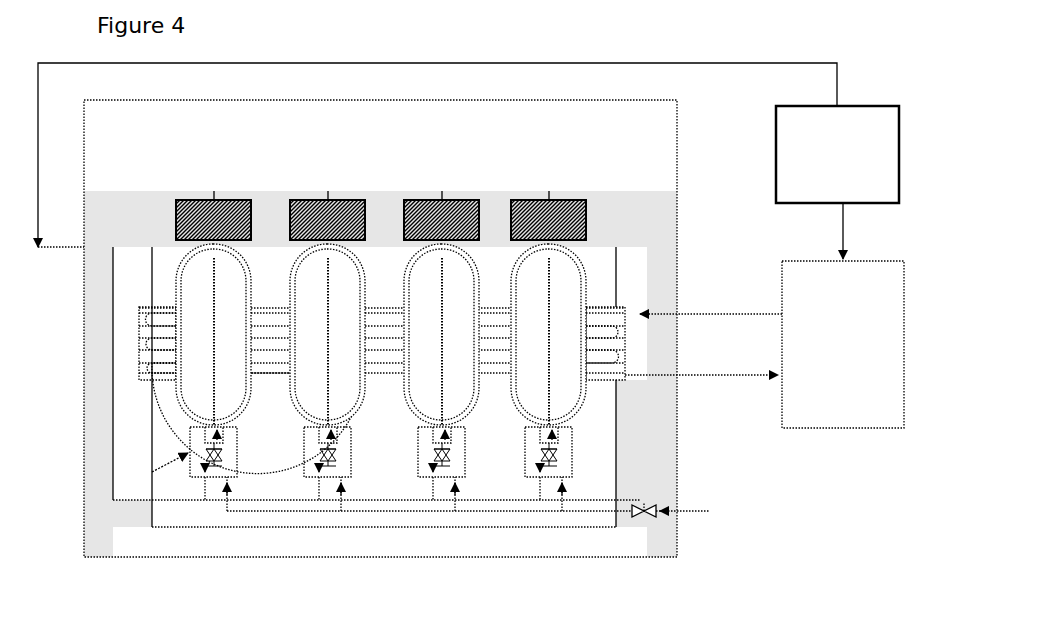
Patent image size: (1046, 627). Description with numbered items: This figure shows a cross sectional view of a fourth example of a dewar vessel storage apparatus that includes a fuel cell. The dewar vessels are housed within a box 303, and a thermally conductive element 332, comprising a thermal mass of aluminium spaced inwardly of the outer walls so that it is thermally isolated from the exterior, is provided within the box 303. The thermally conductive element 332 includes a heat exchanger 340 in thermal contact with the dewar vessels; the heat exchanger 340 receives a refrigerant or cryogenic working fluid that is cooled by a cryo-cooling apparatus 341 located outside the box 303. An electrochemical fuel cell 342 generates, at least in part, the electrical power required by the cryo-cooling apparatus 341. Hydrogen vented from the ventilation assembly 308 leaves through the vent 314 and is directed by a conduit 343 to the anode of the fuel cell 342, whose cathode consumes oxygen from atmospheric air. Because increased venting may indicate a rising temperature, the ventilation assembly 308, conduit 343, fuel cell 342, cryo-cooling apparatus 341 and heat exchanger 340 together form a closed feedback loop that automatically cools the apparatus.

The box 303 is at (84, 400).
The ventilation assembly 308 is at (133, 500).
The vent 314 is at (46, 248).
The thermally conductive element 332 is at (614, 474).
The heat exchanger 340 is at (148, 340).
The cryo-cooling apparatus 341 is at (764, 344).
The electrochemical fuel cell 342 is at (837, 182).
The conduit 343 is at (435, 63).